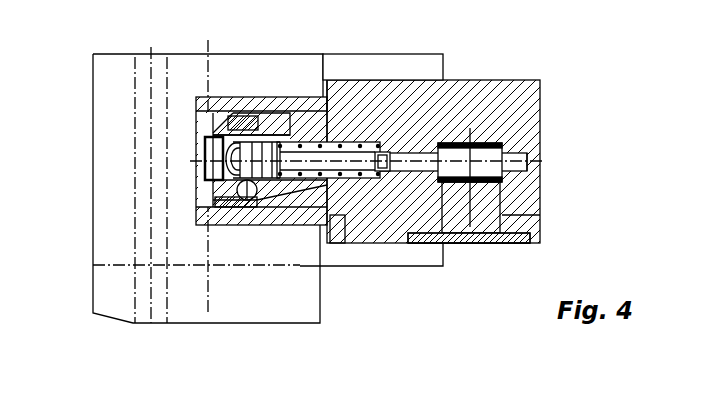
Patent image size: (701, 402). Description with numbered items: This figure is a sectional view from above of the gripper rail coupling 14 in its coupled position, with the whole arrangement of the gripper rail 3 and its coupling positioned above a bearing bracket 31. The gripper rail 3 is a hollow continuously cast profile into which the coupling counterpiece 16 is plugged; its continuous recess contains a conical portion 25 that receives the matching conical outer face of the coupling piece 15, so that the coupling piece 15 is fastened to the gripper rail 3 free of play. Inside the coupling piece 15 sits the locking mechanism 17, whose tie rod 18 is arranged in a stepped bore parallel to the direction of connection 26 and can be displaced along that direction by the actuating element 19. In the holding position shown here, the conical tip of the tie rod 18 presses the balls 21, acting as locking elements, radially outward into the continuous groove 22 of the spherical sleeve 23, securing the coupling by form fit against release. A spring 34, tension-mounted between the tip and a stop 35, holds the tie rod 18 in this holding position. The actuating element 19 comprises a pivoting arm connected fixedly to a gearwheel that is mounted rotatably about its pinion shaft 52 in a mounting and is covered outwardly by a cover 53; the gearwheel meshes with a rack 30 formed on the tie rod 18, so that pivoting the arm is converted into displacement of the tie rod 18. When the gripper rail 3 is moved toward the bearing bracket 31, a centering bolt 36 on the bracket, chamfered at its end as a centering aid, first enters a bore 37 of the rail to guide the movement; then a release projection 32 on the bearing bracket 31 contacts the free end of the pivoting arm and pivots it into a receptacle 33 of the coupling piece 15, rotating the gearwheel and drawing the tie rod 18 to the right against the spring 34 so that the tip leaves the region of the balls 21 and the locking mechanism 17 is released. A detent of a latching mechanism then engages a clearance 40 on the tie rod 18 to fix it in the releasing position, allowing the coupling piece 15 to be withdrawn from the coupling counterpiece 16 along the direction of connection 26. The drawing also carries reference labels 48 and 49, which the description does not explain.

The gripper rail 3 is at (115, 308).
The gripper rail coupling 14 is at (72, 291).
The coupling piece 15 is at (381, 146).
The coupling counterpiece 16 is at (270, 126).
The locking mechanism 17 is at (269, 245).
The tie rod 18 is at (418, 170).
The actuating element 19 is at (479, 147).
The balls 21 is at (233, 226).
The continuous groove 22 is at (263, 97).
The spherical sleeve 23 is at (208, 226).
The conical portion 25 is at (295, 226).
The direction of connection 26 is at (671, 165).
The rack 30 is at (540, 215).
The bearing bracket 31 is at (95, 0).
The release projection 32 is at (413, 0).
The receptacle 33 is at (462, 0).
The spring 34 is at (347, 195).
The stop 35 is at (383, 146).
The centering bolt 36 is at (232, 0).
The bore 37 is at (178, 0).
The clearance 40 is at (391, 173).
The housing wall 48 is at (344, 0).
The housing wall 49 is at (318, 0).
The pinion shaft 52 is at (468, 247).
The cover 53 is at (497, 247).